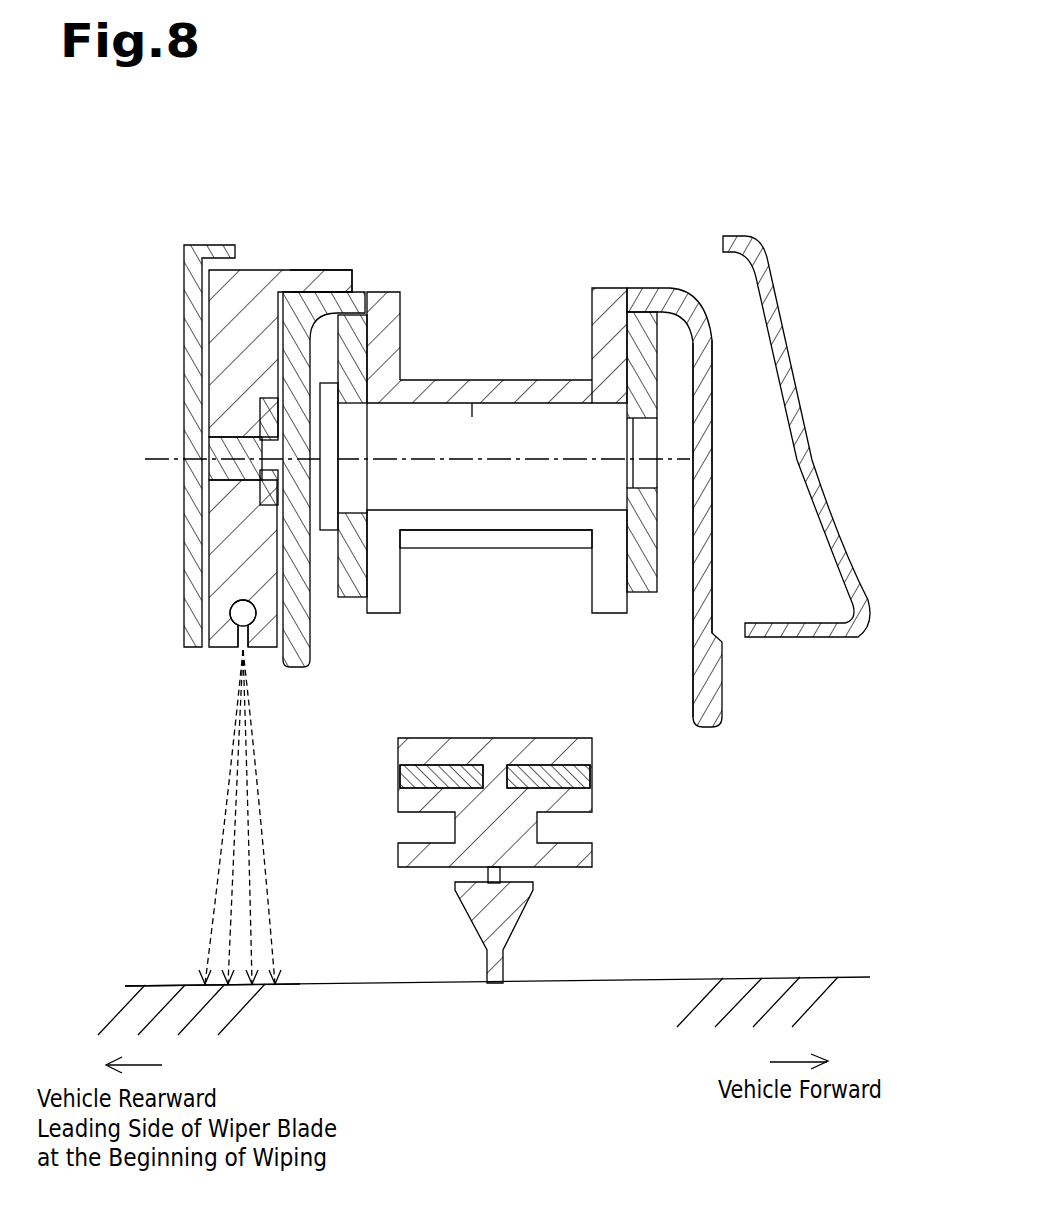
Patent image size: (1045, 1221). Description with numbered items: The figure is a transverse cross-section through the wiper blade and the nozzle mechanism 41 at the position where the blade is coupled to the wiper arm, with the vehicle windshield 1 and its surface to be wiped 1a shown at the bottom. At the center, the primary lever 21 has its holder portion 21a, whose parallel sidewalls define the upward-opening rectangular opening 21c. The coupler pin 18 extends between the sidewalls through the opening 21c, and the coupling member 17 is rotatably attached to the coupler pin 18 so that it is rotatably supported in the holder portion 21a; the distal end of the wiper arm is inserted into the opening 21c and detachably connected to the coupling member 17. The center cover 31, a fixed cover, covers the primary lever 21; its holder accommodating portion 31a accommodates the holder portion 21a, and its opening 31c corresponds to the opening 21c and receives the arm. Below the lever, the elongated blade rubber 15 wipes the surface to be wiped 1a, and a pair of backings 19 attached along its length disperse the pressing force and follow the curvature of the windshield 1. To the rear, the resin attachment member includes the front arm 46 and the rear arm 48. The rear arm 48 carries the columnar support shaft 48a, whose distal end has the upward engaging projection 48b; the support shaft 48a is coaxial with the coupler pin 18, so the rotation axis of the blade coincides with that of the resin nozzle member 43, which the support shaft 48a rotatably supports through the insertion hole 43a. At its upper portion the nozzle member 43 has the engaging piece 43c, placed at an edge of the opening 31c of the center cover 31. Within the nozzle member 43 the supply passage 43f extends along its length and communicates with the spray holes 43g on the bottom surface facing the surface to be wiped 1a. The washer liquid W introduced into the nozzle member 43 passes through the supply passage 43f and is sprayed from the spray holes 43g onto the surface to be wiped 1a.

The vehicle windshield 1 is at (155, 987).
The surface to be wiped 1a is at (165, 985).
The blade rubber 15 is at (485, 737).
The coupling member 17 is at (400, 303).
The coupler pin 18 is at (487, 382).
The backings 19 is at (422, 762).
The primary lever 21 is at (642, 452).
The holder portion 21a is at (628, 288).
The opening 21c is at (370, 325).
The center cover 31 is at (702, 528).
The holder accommodating portion 31a is at (683, 288).
The opening 31c is at (366, 292).
The nozzle mechanism 41 is at (185, 243).
The nozzle member 43 is at (249, 283).
The insertion hole 43a is at (209, 437).
The engaging piece 43c is at (328, 277).
The supply passage 43f is at (243, 600).
The spray holes 43g is at (222, 648).
The front arm 46 is at (780, 341).
The rear arm 48 is at (184, 330).
The support shaft 48a is at (272, 470).
The engaging projection 48b is at (272, 420).
The washer liquid W is at (220, 827).